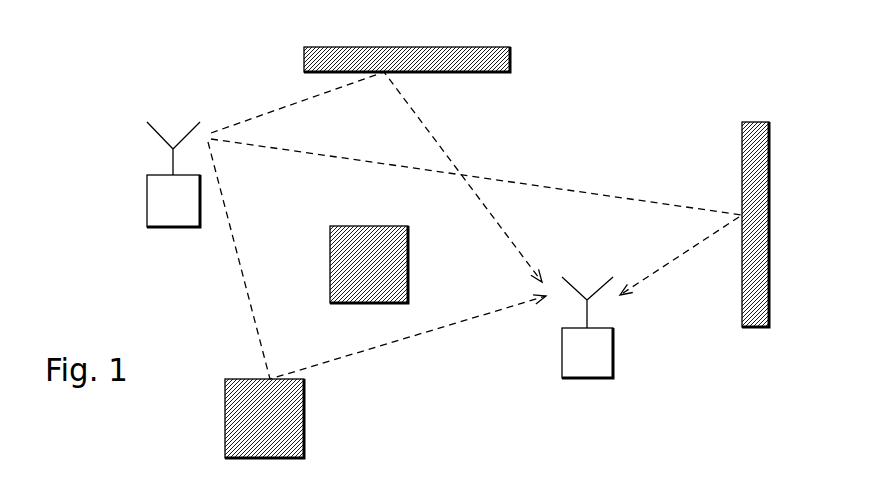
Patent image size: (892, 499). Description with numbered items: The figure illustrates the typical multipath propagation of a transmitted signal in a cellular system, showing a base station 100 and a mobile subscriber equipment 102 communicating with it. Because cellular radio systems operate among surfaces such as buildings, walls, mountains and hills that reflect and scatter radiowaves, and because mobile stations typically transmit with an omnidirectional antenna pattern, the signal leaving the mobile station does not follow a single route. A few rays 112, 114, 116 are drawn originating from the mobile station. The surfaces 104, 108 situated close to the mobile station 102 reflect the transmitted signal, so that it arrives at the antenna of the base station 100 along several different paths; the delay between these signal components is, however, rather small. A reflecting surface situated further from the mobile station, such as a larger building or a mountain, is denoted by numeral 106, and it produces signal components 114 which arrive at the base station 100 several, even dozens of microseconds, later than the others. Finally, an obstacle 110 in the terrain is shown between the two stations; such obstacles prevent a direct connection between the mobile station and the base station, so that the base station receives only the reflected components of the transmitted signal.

The base station 100 is at (562, 350).
The mobile subscriber equipment 102 is at (147, 197).
The reflecting surface 104 is at (448, 47).
The reflecting surface 106 is at (757, 122).
The reflecting surface 108 is at (225, 432).
The obstacle 110 is at (330, 248).
The ray 112 is at (428, 130).
The ray 114 is at (565, 187).
The ray 116 is at (240, 283).